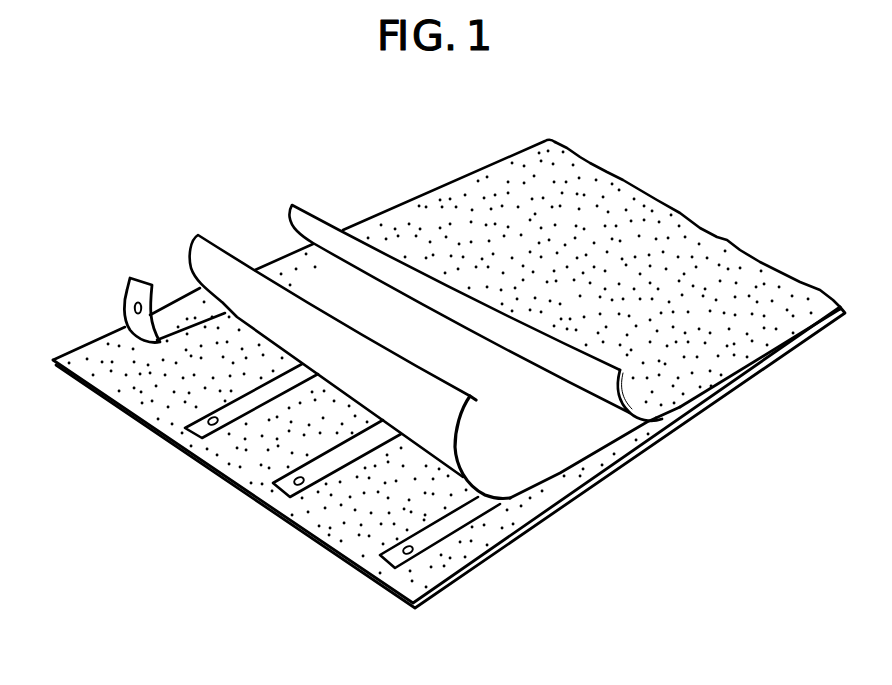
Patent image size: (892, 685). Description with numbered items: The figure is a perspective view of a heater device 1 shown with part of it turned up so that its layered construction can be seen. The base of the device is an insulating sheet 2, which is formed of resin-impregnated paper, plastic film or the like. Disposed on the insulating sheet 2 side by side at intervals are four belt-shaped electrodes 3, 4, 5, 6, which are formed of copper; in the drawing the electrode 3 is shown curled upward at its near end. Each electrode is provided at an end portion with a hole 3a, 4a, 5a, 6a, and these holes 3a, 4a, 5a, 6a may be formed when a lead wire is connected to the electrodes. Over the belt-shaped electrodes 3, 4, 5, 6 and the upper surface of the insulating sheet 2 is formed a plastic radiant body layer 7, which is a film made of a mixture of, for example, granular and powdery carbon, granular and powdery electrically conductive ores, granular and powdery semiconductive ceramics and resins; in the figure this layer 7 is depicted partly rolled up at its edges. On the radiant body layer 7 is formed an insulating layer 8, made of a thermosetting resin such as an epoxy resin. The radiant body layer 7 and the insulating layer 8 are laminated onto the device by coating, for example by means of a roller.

The heater device 1 is at (113, 410).
The insulating sheet 2 is at (93, 384).
The belt-shaped electrode 3 is at (137, 281).
The hole 3a is at (130, 314).
The belt-shaped electrode 4 is at (236, 415).
The hole 4a is at (184, 440).
The belt-shaped electrode 5 is at (320, 477).
The hole 5a is at (283, 498).
The belt-shaped electrode 6 is at (433, 540).
The hole 6a is at (400, 558).
The plastic radiant body layer 7 is at (550, 457).
The insulating layer 8 is at (733, 355).